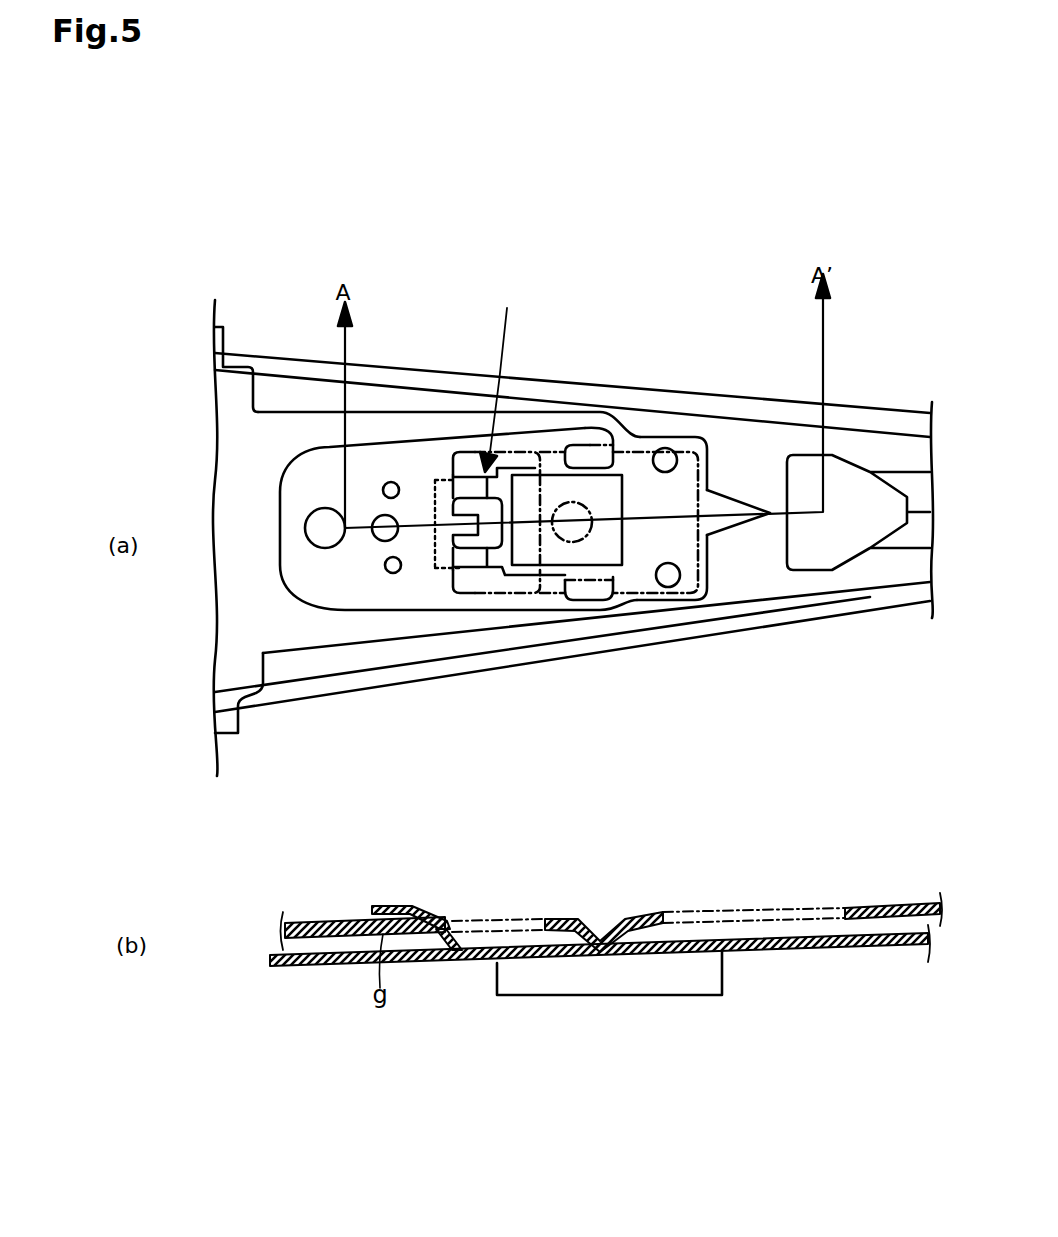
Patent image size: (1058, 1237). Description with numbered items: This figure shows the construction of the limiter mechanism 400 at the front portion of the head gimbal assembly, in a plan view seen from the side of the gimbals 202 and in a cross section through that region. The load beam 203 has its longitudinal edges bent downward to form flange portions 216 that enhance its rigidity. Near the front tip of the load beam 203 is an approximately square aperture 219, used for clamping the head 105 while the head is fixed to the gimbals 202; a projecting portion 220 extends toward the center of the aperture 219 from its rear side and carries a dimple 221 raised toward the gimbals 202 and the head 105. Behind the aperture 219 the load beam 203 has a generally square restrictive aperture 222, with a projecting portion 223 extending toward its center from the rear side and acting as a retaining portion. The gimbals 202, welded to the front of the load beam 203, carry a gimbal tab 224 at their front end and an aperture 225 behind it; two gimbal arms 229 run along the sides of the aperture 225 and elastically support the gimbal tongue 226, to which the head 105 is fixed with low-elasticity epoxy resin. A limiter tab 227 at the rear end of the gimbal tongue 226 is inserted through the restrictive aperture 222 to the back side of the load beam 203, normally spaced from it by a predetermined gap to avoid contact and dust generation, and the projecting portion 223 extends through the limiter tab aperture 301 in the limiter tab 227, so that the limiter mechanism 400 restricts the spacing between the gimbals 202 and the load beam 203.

The head 105 is at (575, 990).
The gimbals 202 is at (800, 947).
The load beam 203 is at (330, 923).
The flange portions 216 is at (884, 598).
The aperture 219 is at (740, 915).
The projecting portion 220 is at (580, 508).
The dimple 221 is at (596, 936).
The restrictive aperture 222 is at (503, 922).
The projecting portion 223 is at (458, 537).
The gimbal tab 224 is at (733, 505).
The aperture 225 is at (308, 482).
The gimbal tongue 226 is at (548, 574).
The limiter tab 227 is at (482, 549).
The gimbal arms 229 is at (490, 686).
The limiter tab aperture 301 is at (473, 523).
The limiter mechanism 400 is at (515, 379).